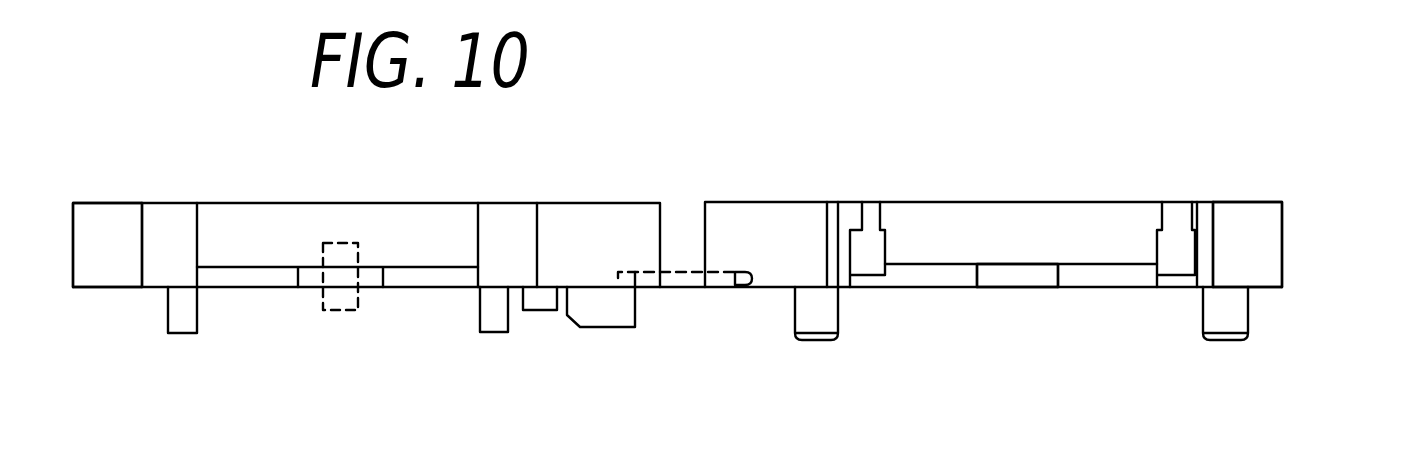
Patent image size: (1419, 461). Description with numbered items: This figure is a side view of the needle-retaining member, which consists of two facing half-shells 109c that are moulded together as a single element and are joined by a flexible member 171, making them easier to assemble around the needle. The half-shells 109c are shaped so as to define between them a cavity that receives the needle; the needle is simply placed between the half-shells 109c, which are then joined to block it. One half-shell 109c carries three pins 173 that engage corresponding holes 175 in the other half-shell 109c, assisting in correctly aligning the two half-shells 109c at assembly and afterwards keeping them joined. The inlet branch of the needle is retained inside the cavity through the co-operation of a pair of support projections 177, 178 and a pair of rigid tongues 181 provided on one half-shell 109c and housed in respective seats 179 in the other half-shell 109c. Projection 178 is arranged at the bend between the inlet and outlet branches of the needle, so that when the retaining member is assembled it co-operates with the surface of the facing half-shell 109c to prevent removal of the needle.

The half-shell 109c is at (108, 235).
The flexible member 171 is at (681, 280).
The pin 173 is at (820, 315).
The hole 175 is at (607, 310).
The support projection 177 is at (342, 307).
The support projection 178 is at (538, 313).
The seat 179 is at (863, 245).
The rigid tongue 181 is at (183, 317).